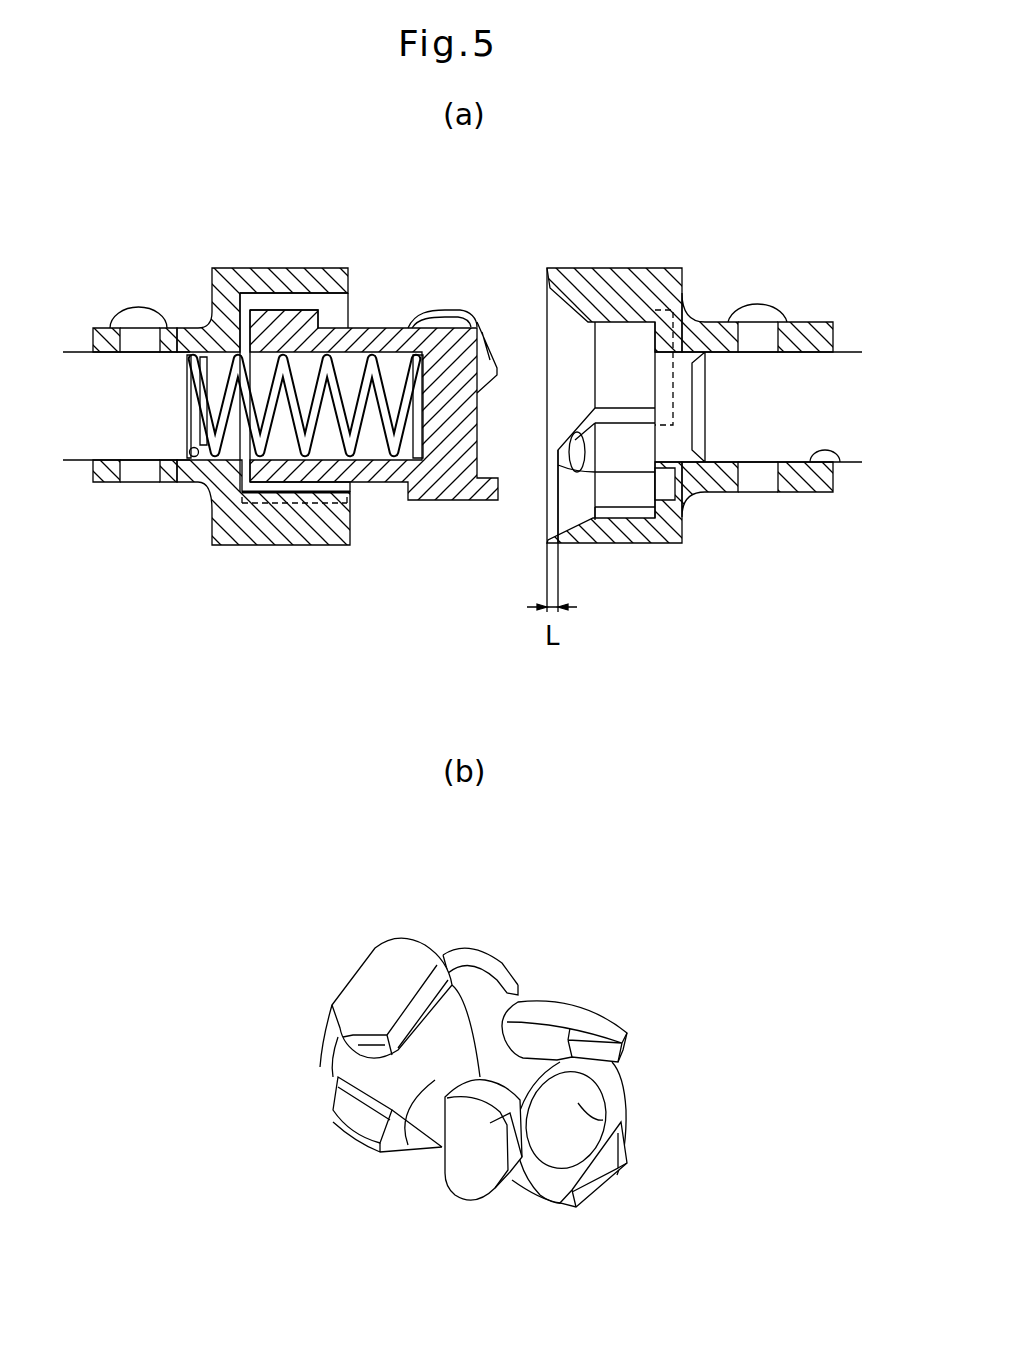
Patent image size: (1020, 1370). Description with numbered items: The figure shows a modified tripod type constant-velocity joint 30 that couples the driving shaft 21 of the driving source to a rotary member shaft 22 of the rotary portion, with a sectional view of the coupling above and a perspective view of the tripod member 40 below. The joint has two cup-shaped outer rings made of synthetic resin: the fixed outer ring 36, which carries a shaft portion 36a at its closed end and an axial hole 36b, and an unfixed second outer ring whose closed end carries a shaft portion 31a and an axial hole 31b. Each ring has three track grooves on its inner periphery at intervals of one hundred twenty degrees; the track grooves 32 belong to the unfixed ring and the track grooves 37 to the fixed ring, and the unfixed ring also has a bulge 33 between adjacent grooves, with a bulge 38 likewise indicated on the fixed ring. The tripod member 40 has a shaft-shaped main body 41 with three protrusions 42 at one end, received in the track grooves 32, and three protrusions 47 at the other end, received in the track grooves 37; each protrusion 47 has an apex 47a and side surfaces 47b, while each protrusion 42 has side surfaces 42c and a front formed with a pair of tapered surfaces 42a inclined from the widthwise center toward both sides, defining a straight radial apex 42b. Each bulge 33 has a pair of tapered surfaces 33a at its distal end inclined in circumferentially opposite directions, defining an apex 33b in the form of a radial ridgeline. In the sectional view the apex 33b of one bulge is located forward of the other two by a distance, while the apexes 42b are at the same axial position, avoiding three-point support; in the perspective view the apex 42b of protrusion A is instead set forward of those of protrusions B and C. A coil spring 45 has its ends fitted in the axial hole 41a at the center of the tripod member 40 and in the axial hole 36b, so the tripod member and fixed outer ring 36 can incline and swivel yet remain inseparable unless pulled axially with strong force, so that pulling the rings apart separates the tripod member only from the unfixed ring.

The driving shaft 21 is at (92, 438).
The rotary member shaft 22 is at (843, 360).
The tripod type constant-velocity joint 30 is at (663, 216).
The shaft portion 31a is at (808, 325).
The axial hole 31b is at (840, 465).
The track groove 32 is at (667, 545).
The bulge 33 is at (632, 320).
The tapered surface 33a is at (583, 485).
The apex 33b is at (557, 467).
The outer ring 36 is at (232, 268).
The shaft portion 36a is at (105, 335).
The axial hole 36b is at (172, 340).
The track groove 37 is at (320, 292).
The bulge 38 is at (325, 546).
The tripod member 40 is at (395, 330).
The main body 41 is at (383, 475).
The axial hole 41a is at (348, 330).
The protrusion 42 is at (440, 312).
The tapered surface 42a is at (483, 400).
The apex 42b is at (500, 360).
The side surface 42c is at (583, 1030).
The coil spring 45 is at (253, 422).
The protrusion 47 is at (250, 298).
The apex 47a is at (370, 975).
The side surface 47b is at (355, 1043).